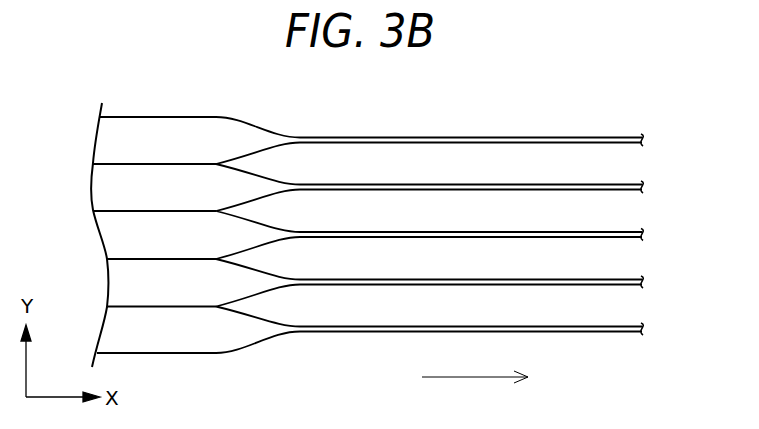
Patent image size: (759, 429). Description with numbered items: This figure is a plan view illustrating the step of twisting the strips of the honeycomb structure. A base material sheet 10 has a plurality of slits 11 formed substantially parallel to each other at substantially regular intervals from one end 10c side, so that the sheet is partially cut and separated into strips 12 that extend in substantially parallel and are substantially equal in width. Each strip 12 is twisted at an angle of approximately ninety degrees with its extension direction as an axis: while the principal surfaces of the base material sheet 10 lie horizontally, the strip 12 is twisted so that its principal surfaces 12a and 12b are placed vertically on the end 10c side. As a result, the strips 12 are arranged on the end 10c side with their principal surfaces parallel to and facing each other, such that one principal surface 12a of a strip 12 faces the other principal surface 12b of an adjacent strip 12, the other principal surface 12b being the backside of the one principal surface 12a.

The base material sheet 10 is at (26, 211).
The end of the base material sheet 10c is at (733, 243).
The slit 11 is at (139, 163).
The strip 12 is at (615, 137).
The principal surface of the strip 12a is at (158, 140).
The other principal surface of the strip 12b is at (511, 144).